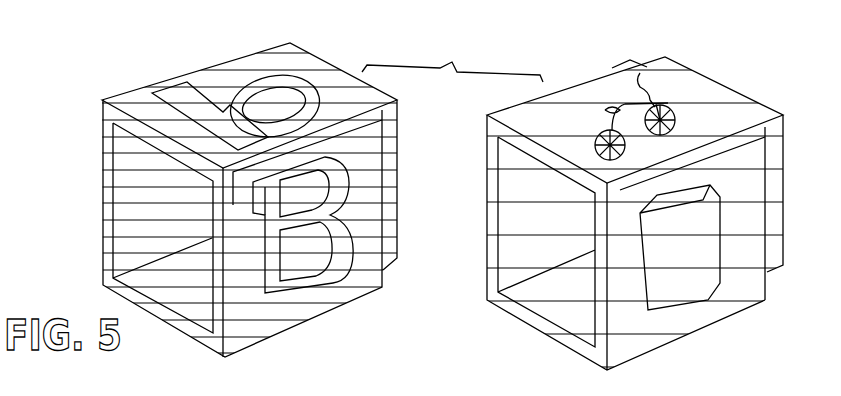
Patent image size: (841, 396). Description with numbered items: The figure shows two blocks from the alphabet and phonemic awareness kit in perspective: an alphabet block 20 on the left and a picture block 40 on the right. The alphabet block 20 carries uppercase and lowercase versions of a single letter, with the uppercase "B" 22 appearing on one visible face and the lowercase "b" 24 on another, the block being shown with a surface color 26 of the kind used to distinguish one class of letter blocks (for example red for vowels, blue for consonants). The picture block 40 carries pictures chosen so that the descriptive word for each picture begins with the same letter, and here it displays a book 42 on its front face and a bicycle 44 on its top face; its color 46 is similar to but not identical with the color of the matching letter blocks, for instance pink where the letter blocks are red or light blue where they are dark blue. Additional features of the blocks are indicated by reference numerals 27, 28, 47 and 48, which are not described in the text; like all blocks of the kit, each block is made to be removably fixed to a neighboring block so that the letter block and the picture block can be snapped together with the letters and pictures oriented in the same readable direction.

The alphabet block 20 is at (420, 199).
The uppercase "B" 22 is at (270, 297).
The lowercase "b" 24 is at (237, 90).
The color 26 is at (258, 57).
The top face of first block 27 is at (327, 66).
The recessed side face of first block 28 is at (117, 263).
The picture block 40 is at (420, 202).
The book 42 is at (682, 282).
The bicycle 44 is at (645, 88).
The color 46 is at (687, 100).
The right edge of second block 47 is at (748, 107).
The recessed side face of second block 48 is at (522, 295).